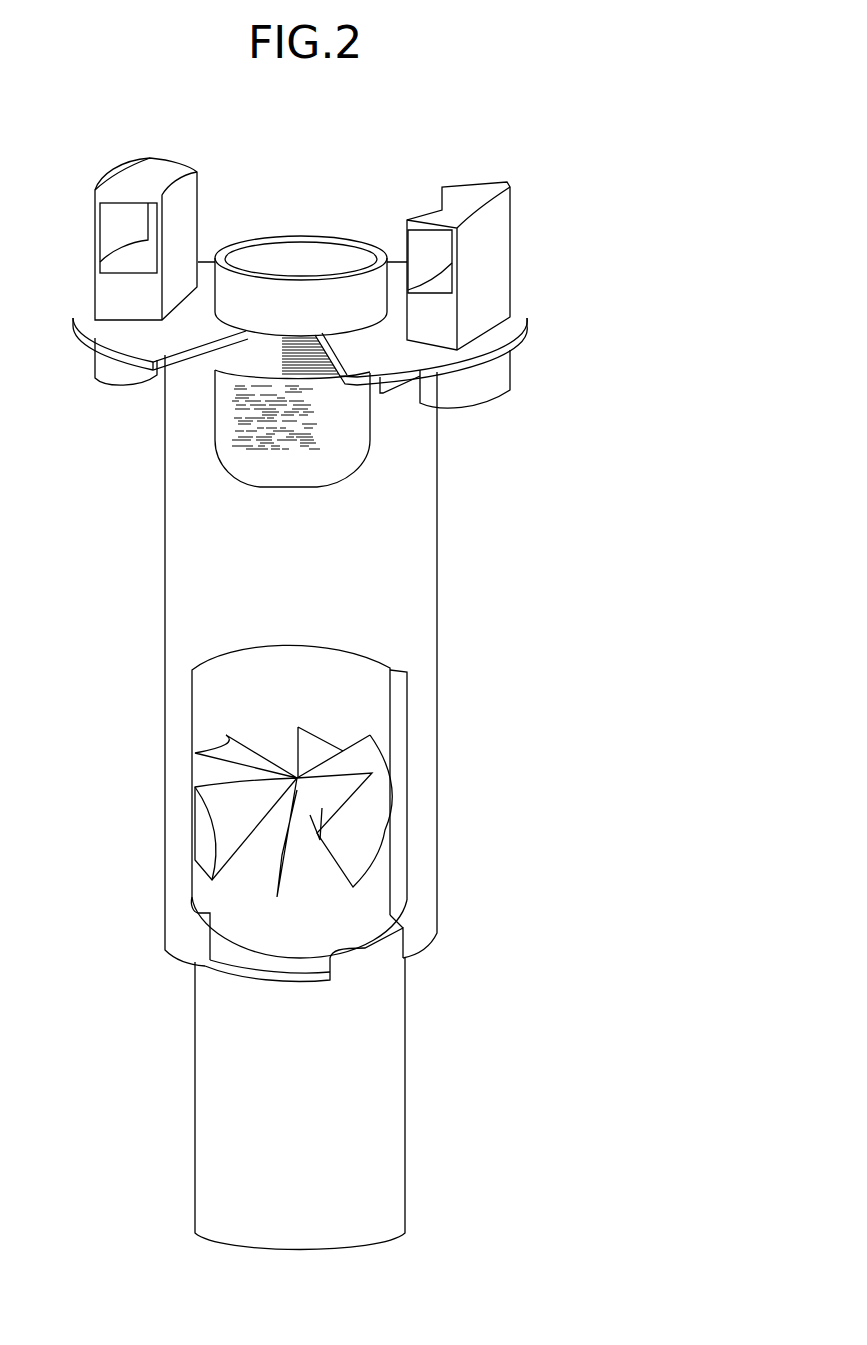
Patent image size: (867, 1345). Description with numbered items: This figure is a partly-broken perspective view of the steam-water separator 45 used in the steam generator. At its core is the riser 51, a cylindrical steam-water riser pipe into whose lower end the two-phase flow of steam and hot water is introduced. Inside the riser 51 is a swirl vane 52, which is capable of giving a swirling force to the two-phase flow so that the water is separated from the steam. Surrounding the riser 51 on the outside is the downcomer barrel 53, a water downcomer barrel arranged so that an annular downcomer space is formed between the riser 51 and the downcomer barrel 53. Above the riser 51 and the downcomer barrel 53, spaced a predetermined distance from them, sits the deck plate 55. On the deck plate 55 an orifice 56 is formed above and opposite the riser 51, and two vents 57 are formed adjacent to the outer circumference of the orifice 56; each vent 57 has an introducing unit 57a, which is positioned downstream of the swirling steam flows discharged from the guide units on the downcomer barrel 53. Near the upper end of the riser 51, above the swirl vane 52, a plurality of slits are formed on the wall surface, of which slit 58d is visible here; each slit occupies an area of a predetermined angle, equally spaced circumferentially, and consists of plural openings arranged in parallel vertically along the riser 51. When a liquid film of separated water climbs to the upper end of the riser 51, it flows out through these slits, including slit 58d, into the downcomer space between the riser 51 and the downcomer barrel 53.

The steam-water separator 45 is at (462, 146).
The riser 51 is at (385, 1128).
The swirl vane 52 is at (203, 802).
The downcomer barrel 53 is at (423, 498).
The deck plate 55 is at (113, 328).
The orifice 56 is at (287, 253).
The vent 57 is at (115, 188).
The introducing unit 57a is at (128, 374).
The slit 58d is at (233, 418).